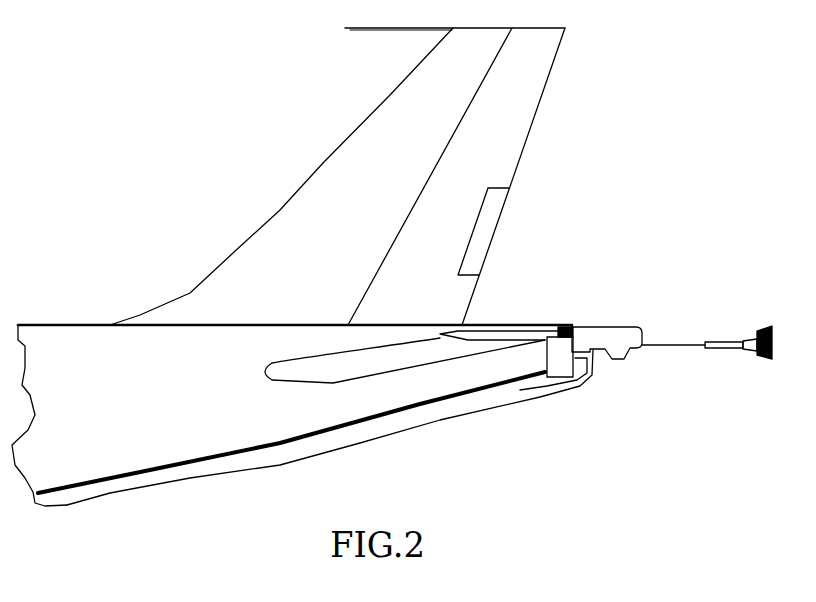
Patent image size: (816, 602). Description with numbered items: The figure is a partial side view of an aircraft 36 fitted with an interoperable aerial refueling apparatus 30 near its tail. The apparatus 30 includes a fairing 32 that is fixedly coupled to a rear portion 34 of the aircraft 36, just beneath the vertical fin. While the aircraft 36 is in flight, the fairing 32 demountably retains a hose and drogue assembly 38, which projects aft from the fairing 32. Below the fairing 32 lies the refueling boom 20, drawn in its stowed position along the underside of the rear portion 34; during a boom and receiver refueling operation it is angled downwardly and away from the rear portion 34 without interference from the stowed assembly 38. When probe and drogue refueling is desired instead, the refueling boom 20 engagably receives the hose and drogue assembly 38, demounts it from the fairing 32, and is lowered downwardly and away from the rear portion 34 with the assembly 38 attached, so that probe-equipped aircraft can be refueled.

The refueling boom 20 is at (417, 418).
The interoperable aerial refueling apparatus 30 is at (688, 285).
The fairing 32 is at (604, 336).
The rear portion 34 is at (482, 323).
The aircraft 36 is at (153, 409).
The hose and drogue assembly 38 is at (688, 345).